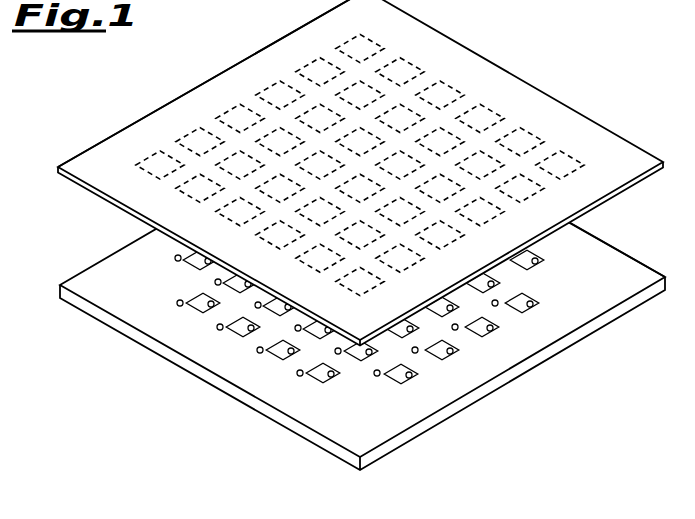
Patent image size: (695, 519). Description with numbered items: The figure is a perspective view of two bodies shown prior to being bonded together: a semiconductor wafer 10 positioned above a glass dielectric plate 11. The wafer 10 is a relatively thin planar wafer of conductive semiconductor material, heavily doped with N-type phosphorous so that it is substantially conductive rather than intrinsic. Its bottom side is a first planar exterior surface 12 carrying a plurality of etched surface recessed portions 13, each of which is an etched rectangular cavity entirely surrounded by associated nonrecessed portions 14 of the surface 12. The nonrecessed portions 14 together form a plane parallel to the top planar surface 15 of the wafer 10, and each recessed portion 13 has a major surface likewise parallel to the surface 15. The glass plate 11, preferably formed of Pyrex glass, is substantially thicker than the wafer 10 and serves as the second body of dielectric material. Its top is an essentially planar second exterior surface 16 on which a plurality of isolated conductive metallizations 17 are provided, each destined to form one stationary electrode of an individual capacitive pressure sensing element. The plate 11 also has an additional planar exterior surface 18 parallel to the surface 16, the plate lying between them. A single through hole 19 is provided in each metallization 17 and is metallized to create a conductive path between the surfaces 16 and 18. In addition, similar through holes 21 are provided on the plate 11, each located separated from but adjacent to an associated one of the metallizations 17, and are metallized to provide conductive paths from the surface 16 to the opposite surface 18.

The semiconductor wafer 10 is at (638, 155).
The glass dielectric plate 11 is at (577, 337).
The first planar exterior surface 12 is at (628, 188).
The recessed portions 13 is at (494, 116).
The nonrecessed portions 14 is at (426, 80).
The top planar surface 15 is at (266, 53).
The second exterior surface 16 is at (637, 270).
The conductive metallizations 17 is at (523, 302).
The additional planar exterior surface 18 is at (495, 393).
The through hole 19 is at (447, 370).
The through holes 21 is at (299, 376).